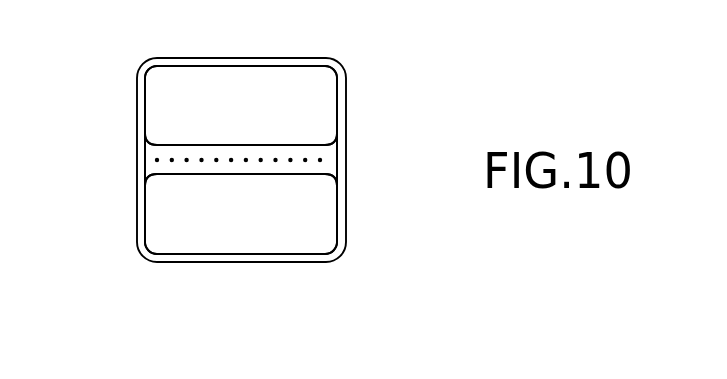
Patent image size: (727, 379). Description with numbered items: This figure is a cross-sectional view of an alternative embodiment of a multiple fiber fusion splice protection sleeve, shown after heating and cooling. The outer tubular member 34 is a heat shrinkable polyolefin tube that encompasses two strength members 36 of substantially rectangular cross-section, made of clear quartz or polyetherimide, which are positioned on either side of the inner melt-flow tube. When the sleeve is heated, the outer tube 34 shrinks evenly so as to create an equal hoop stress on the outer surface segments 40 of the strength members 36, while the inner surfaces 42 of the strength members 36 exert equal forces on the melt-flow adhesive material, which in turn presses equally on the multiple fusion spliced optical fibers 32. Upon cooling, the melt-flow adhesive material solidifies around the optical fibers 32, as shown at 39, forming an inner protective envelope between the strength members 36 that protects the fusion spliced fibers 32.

The multiple fusion spliced optical fibers 32 is at (153, 162).
The outer tubular member 34 is at (347, 107).
The strength members 36 is at (325, 127).
The solidified melt-flow adhesive material 39 is at (333, 167).
The outer surface segments 40 is at (203, 67).
The inner surfaces 42 is at (237, 143).